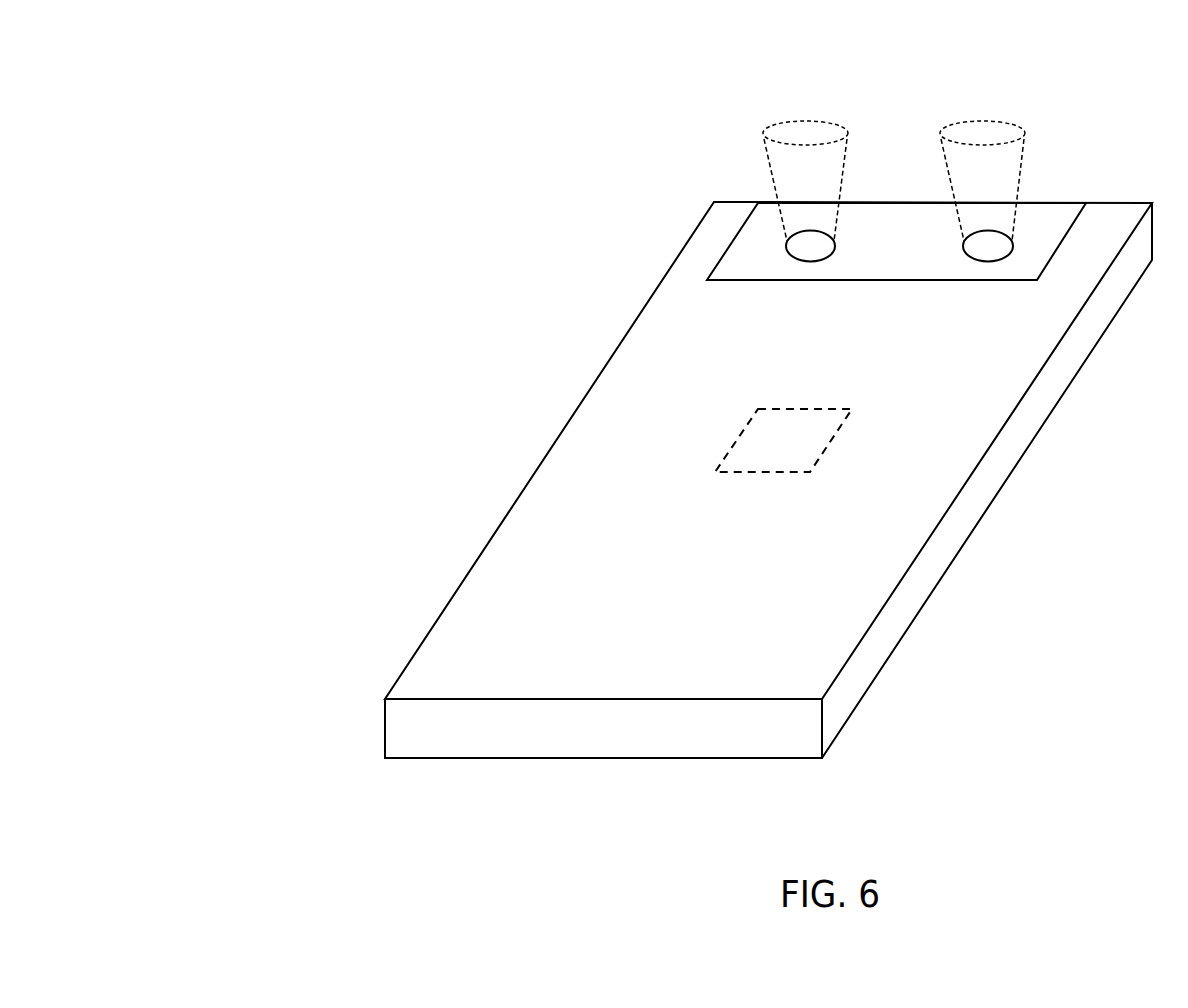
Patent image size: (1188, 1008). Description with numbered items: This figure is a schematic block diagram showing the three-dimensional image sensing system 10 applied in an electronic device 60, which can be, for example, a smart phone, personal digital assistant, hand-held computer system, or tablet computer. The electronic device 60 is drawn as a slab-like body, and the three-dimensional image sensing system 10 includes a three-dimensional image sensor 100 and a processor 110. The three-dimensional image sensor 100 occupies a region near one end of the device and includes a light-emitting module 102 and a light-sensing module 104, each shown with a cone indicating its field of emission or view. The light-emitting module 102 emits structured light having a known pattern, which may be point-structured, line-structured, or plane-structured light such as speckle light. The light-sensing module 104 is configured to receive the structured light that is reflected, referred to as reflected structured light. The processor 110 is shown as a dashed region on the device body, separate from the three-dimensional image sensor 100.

The electronic device 60 is at (217, 46).
The 3D image sensing system 10 is at (740, 186).
The 3D image sensor 100 is at (741, 281).
The light-emitting module 102 is at (980, 262).
The light-sensing module 104 is at (806, 262).
The processor 110 is at (811, 459).